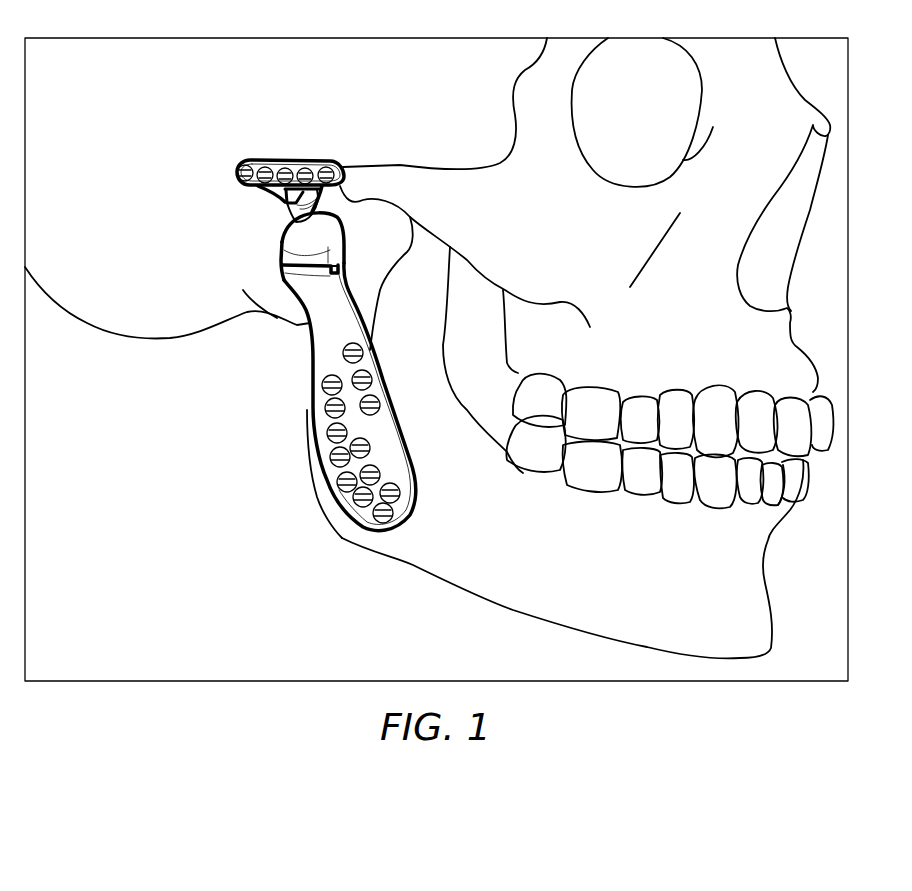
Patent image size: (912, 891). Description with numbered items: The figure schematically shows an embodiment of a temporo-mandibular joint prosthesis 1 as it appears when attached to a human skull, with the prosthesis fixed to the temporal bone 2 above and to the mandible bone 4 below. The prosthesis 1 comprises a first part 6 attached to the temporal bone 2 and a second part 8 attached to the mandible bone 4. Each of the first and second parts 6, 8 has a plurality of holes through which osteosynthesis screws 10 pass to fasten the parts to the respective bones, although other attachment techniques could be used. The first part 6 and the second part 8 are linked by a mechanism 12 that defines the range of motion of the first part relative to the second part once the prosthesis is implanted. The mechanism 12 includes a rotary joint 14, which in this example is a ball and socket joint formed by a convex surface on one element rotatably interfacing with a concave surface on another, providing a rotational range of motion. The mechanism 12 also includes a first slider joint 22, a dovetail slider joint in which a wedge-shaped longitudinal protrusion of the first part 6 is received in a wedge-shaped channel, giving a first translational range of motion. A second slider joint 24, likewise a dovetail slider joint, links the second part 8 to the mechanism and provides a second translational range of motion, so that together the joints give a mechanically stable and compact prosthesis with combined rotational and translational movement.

The temporo-mandibular joint prosthesis 1 is at (290, 312).
The temporal bone 2 is at (307, 165).
The mandible bone 4 is at (431, 564).
The first part 6 is at (320, 159).
The second part 8 is at (320, 372).
The osteosynthesis screws 10 is at (285, 167).
The mechanism 12 is at (271, 256).
The rotary joint 14 is at (271, 226).
The first slider joint 22 is at (283, 201).
The second slider joint 24 is at (334, 268).